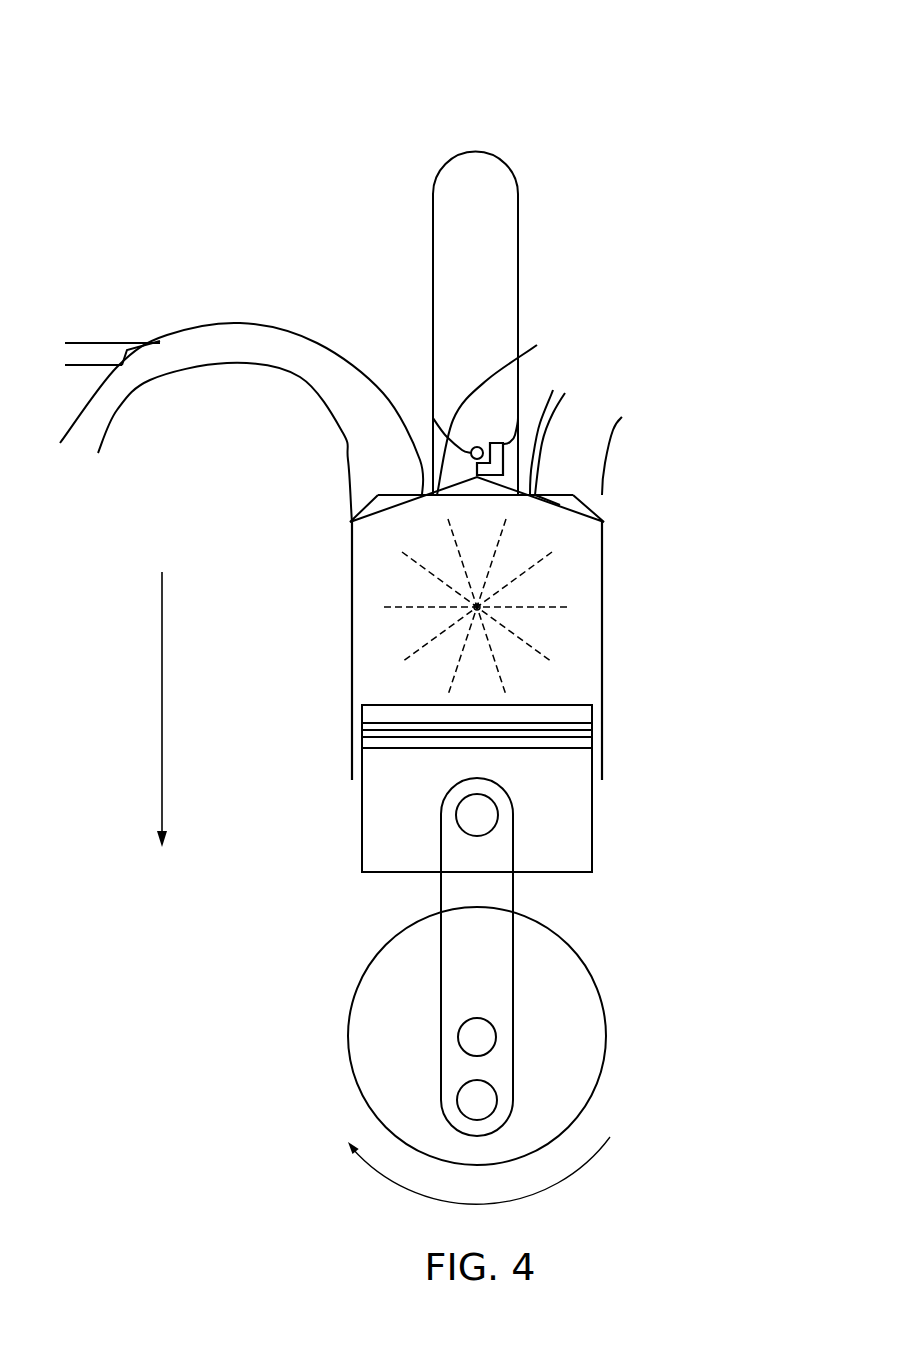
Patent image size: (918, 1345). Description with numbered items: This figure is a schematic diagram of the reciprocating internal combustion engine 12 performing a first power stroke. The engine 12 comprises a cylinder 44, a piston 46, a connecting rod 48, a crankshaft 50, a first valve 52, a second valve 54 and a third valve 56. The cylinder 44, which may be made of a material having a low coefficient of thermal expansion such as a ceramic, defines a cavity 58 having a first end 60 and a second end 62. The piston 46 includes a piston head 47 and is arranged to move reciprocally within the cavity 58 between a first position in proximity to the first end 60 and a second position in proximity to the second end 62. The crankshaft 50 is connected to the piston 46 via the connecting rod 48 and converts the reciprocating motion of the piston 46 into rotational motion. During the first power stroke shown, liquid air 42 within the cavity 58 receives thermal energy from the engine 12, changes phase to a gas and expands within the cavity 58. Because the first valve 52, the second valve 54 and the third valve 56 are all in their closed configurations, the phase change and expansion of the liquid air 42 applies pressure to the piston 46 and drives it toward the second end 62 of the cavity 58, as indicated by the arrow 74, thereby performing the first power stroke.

The reciprocating internal combustion engine 12 is at (183, 93).
The liquid air 42 is at (561, 605).
The cylinder 44 is at (602, 635).
The piston 46 is at (572, 837).
The piston head 47 is at (576, 720).
The connecting rod 48 is at (495, 952).
The crankshaft 50 is at (485, 1040).
The first valve 52 is at (385, 508).
The second valve 54 is at (573, 495).
The third valve 56 is at (463, 497).
The cavity 58 is at (368, 680).
The first end 60 is at (609, 497).
The second end 62 is at (640, 796).
The arrow indicating first power stroke 74 is at (162, 712).